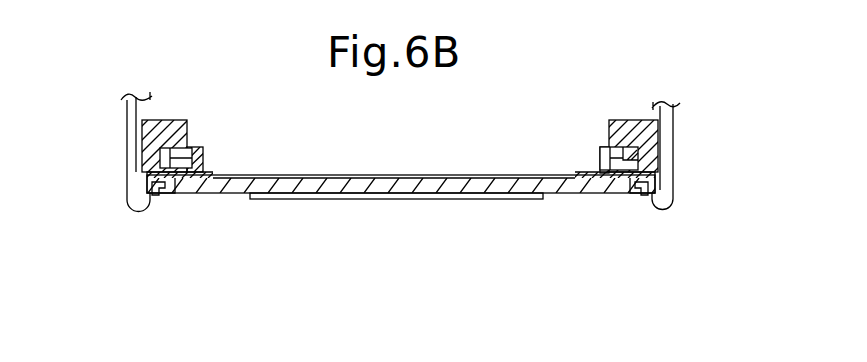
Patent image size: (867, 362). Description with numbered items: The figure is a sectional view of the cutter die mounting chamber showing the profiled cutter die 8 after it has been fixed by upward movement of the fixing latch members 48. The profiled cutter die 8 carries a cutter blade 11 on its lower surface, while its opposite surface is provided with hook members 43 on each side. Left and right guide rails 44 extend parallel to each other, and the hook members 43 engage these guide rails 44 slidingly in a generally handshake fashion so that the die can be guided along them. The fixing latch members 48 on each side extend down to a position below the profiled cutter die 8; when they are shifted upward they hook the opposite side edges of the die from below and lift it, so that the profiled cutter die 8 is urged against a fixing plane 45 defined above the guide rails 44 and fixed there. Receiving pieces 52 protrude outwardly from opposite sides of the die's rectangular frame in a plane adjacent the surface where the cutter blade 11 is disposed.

The profiled cutter die 8 is at (404, 197).
The cutter blade 11 is at (358, 200).
The hook members 43 is at (150, 176).
The guide rails 44 is at (190, 158).
The fixing plane 45 is at (638, 158).
The fixing latch members 48 is at (127, 163).
The receiving pieces 52 is at (152, 196).